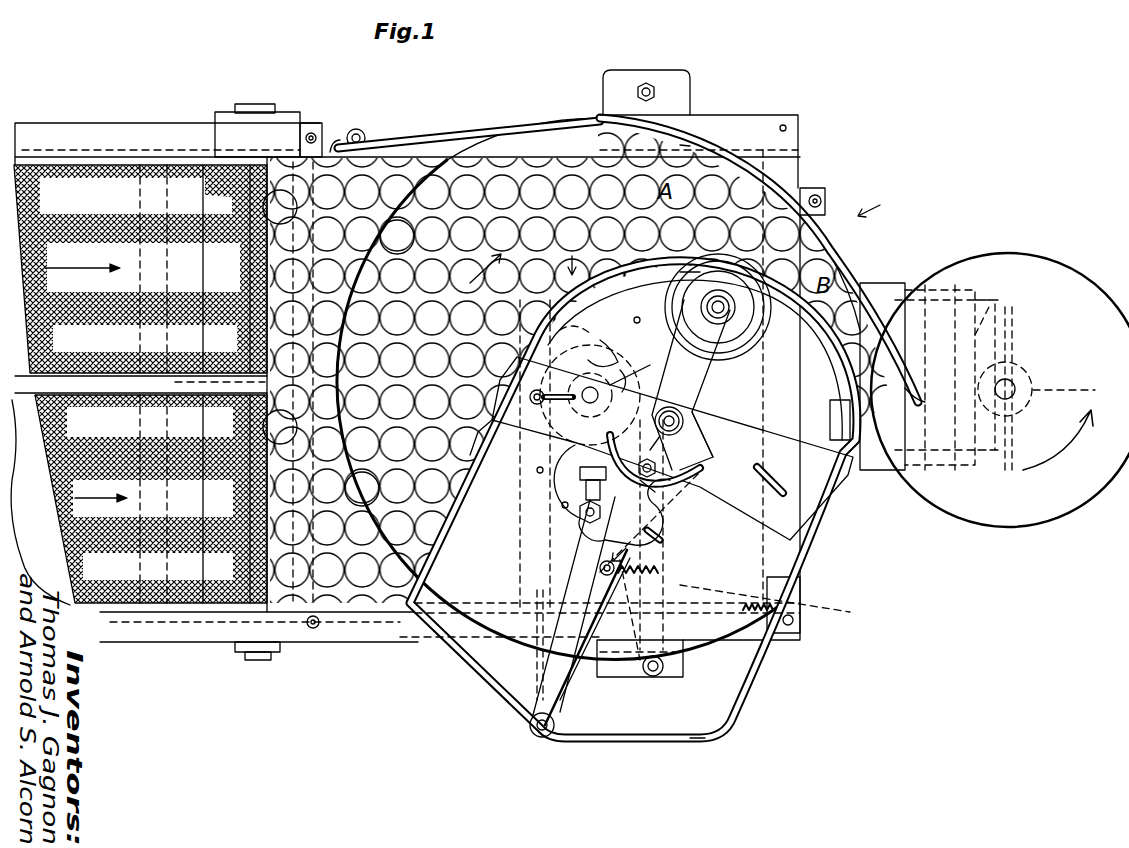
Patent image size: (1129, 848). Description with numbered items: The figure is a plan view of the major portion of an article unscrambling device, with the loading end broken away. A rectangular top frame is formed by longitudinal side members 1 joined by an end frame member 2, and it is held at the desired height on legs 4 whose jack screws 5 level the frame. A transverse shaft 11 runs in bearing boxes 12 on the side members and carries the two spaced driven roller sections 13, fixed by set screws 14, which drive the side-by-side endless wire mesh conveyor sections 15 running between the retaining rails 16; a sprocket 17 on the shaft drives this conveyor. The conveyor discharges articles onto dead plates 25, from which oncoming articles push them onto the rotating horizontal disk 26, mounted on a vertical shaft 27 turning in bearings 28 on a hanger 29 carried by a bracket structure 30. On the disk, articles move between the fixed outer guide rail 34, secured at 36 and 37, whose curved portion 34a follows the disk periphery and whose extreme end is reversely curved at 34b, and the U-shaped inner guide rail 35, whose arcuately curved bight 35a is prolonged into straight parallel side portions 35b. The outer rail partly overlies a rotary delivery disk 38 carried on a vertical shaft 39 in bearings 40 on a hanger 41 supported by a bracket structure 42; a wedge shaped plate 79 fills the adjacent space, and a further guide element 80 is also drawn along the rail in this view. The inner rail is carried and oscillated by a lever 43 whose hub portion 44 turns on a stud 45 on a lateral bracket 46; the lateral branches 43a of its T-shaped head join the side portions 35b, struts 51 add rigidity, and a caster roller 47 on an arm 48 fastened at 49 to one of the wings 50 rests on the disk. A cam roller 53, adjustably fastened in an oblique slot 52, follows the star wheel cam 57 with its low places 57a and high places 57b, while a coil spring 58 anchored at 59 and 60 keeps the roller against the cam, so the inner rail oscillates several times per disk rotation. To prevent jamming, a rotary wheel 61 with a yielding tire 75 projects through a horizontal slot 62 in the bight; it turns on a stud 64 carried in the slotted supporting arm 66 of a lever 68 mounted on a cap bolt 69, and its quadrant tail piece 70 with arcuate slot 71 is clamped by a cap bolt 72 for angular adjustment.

The longitudinal side members 1 is at (336, 130).
The end frame member 2 is at (806, 178).
The uprights or legs 4 is at (675, 96).
The jack screws 5 is at (648, 82).
The second transverse shaft 11 is at (255, 658).
The bearing boxes or journals 12 is at (300, 135).
The driven roller sections 13 is at (580, 365).
The set screws 14 is at (280, 317).
The endless conveyor sections 15 is at (180, 157).
The retaining rails 16 is at (114, 132).
The sprocket 17 is at (216, 381).
The dead plates 25 is at (374, 238).
The rotating horizontal disk or plate 26 is at (598, 388).
The vertical shaft 27 is at (605, 340).
The bearings 28 is at (632, 362).
The hanger 29 is at (590, 361).
The bracket structure 30 is at (515, 486).
The outer guide rail 34 is at (461, 121).
The curved portion of outer guide rail 34a is at (678, 146).
The reversely curved end of outer guide rail 34b is at (924, 381).
The inner guide rail 35 is at (574, 254).
The arcuately curved portion of inner guide rail 35a is at (695, 332).
The side portions of inner guide rail 35b is at (832, 600).
The outer guide rail fastening 36 is at (364, 132).
The outer guide rail fastening 37 is at (820, 205).
The rotary delivery disk conveyor 38 is at (1000, 390).
The vertical shaft 39 is at (1014, 384).
The bearings 40 is at (1018, 365).
The hanger 41 is at (992, 310).
The bracket structure 42 is at (910, 475).
The lever 43 is at (588, 630).
The lateral branches of lever 43a is at (755, 436).
The hub portion 44 is at (548, 740).
The vertical shaft or stud 45 is at (532, 740).
The lateral bracket 46 is at (520, 693).
The caster wheel or roller 47 is at (579, 476).
The supporting arm 48 is at (562, 506).
The adjustable fastening 49 is at (602, 519).
The wings 50 is at (680, 522).
The struts or connecting arms 51 is at (468, 682).
The oblique slots 52 is at (752, 480).
The cam roller 53 is at (493, 437).
The cam 57 is at (628, 311).
The indentations or low places 57a is at (644, 364).
The high places 57b is at (583, 317).
The coil spring 58 is at (655, 578).
The spring attachment to lever 59 is at (598, 570).
The spring attachment to frame 60 is at (795, 622).
The rotary wheel 61 is at (748, 335).
The horizontal slot 62 is at (836, 410).
The vertical stud or short shaft 64 is at (745, 310).
The supporting arm 66 is at (700, 378).
The lever 68 is at (688, 410).
The cap bolt 69 is at (688, 436).
The adjusting arm or tail piece 70 is at (705, 460).
The arcuate slot 71 is at (676, 481).
The cap bolt 72 is at (667, 499).
The endless hollow tube or tire 75 is at (673, 271).
The wedge shaped plate 79 is at (895, 332).
The curved guide rail 80 is at (715, 152).